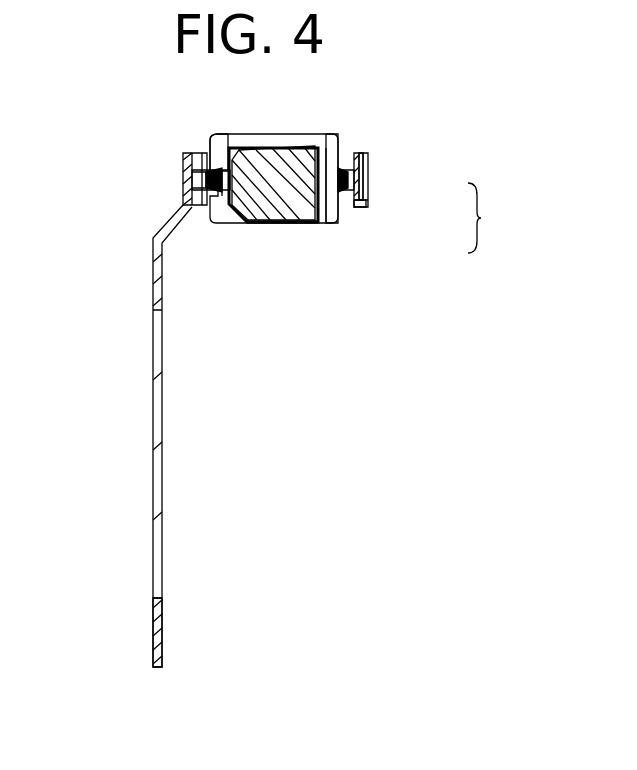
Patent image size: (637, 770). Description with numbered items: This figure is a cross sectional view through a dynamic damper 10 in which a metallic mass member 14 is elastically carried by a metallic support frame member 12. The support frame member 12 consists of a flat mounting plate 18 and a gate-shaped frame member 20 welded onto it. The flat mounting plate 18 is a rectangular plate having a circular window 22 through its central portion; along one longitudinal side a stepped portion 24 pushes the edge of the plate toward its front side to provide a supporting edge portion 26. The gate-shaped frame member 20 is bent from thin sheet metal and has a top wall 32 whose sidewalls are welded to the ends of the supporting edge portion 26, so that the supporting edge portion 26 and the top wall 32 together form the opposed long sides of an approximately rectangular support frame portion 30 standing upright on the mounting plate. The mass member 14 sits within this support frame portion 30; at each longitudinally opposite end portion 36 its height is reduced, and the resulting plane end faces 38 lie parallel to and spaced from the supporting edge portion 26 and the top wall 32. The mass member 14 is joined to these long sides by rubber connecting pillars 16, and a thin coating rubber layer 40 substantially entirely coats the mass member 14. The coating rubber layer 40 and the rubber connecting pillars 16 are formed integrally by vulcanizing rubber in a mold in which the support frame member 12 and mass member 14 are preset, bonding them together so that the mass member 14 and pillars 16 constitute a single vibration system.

The dynamic damper 10 is at (395, 263).
The support frame member 12 is at (487, 218).
The mass member 14 is at (273, 156).
The longitudinally opposite end portion 36 is at (273, 183).
The rubber connecting pillar 16 is at (212, 140).
The flat mounting plate 18 is at (167, 302).
The gate-shaped frame member 20 is at (372, 200).
The circular window 22 is at (157, 600).
The stepped portion 24 is at (168, 223).
The supporting edge portion 26 is at (188, 175).
The support frame portion 30 is at (372, 157).
The top wall 32 is at (360, 177).
The end face 38 is at (219, 141).
The coating rubber layer 40 is at (267, 224).